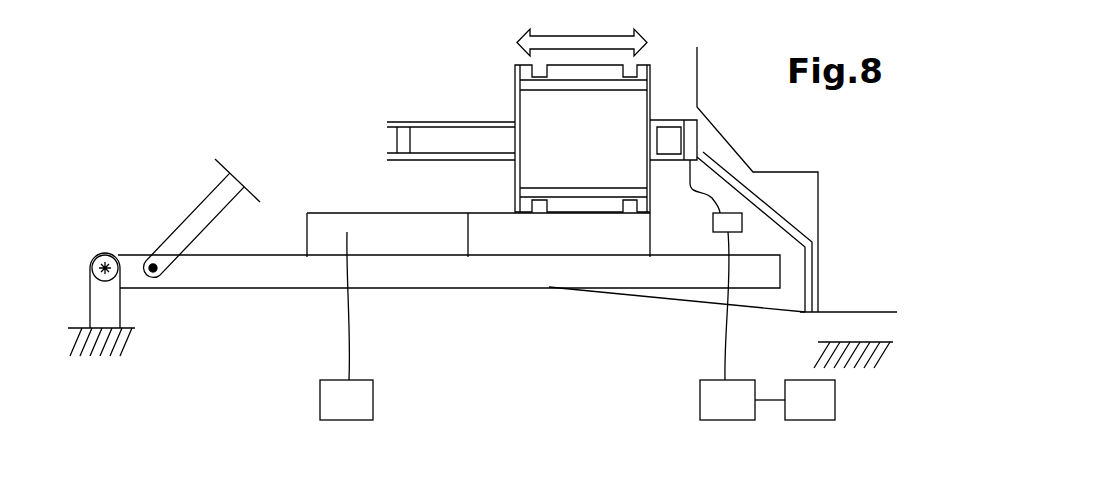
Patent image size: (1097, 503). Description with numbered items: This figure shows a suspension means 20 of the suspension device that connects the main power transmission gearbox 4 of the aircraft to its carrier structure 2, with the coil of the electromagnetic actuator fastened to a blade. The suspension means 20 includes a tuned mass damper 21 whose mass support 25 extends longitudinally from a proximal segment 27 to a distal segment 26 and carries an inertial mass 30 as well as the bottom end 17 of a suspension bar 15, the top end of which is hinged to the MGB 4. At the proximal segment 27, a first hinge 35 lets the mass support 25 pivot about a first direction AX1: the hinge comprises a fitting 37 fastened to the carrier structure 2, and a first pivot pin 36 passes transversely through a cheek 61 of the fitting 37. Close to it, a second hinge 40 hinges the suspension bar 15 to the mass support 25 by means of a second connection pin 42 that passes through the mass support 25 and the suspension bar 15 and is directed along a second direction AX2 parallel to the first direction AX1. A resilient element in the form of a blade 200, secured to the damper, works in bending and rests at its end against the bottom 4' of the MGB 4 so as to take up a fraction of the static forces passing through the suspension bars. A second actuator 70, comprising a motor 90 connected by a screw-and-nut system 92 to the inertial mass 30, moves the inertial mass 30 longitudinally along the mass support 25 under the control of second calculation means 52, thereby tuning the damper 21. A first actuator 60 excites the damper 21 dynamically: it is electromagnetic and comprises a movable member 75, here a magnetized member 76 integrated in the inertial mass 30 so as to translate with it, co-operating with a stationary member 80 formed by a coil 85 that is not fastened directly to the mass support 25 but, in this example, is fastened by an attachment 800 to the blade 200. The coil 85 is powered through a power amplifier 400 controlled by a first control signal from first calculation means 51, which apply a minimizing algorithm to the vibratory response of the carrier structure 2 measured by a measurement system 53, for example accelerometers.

The carrier structure 2 is at (87, 326).
The main power transmission gearbox 4 is at (843, 172).
The bottom of the MGB 4' is at (871, 293).
The suspension bar 15 is at (213, 180).
The bottom end 17 is at (197, 198).
The suspension means 20 is at (518, 341).
The tuned mass damper 21 is at (583, 304).
The mass support 25 is at (415, 288).
The distal segment 26 is at (762, 240).
The proximal segment 27 is at (100, 182).
The inertial mass 30 is at (637, 98).
The first hinge 35 is at (90, 250).
The first pivot pin 36 is at (100, 262).
The fitting 37 is at (163, 343).
The cheek 61 is at (123, 302).
The second hinge 40 is at (164, 292).
The second connection pin 42 is at (153, 264).
The first calculation means 51 is at (717, 412).
The second calculation means 52 is at (337, 412).
The measurement system 53 is at (800, 412).
The first actuator 60 is at (433, 90).
The second actuator 70 is at (377, 212).
The movable member 75 is at (458, 183).
The magnetized member 76 is at (513, 170).
The stationary member 80 is at (410, 113).
The coil 85 is at (388, 120).
The motor 90 is at (427, 243).
The screw-and-nut system 92 is at (487, 243).
The blade 200 is at (793, 327).
The power amplifier 400 is at (713, 222).
The attachment 800 is at (815, 222).
The first direction AX1 is at (98, 282).
The second direction AX2 is at (163, 270).